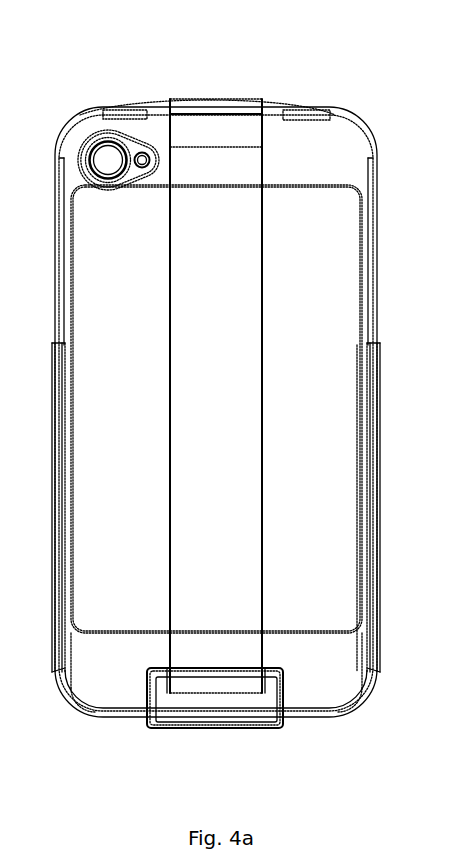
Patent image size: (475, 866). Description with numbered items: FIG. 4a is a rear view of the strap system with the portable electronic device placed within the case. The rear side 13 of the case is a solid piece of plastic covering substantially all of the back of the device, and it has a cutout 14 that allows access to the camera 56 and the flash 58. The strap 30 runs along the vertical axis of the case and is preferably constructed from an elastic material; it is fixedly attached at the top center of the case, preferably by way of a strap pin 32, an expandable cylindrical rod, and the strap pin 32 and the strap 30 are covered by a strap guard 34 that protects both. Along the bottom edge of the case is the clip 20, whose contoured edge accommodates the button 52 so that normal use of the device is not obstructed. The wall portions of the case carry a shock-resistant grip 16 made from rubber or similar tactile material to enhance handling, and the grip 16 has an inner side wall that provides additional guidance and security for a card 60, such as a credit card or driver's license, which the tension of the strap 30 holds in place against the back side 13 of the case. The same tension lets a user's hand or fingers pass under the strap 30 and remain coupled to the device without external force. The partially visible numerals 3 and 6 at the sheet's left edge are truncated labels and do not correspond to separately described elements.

The back side of the case 13 is at (317, 153).
The cutout 14 is at (110, 182).
The shock-resistant grip 16 is at (365, 446).
The clip 20 is at (185, 705).
The strap 30 is at (225, 378).
The strap pin 32 is at (205, 107).
The strap guard 34 is at (240, 137).
The button 52 is at (15, 605).
The camera 56 is at (88, 147).
The flash 58 is at (142, 157).
The card 60 is at (322, 260).
The case (partial numeral) 3 is at (8, 313).
The rail (partial numeral) 6 is at (8, 398).